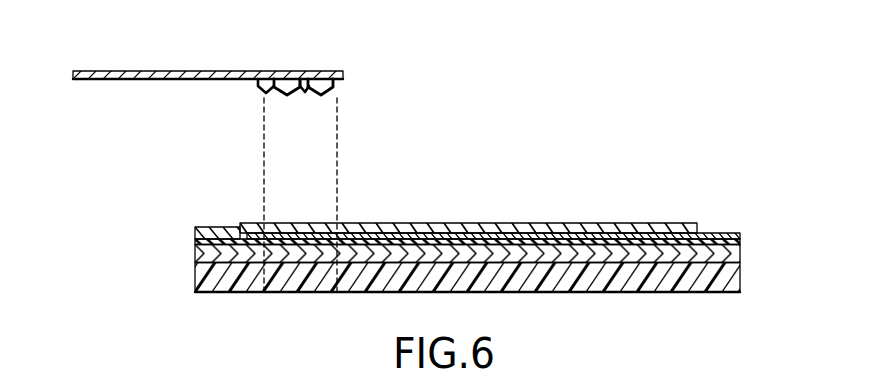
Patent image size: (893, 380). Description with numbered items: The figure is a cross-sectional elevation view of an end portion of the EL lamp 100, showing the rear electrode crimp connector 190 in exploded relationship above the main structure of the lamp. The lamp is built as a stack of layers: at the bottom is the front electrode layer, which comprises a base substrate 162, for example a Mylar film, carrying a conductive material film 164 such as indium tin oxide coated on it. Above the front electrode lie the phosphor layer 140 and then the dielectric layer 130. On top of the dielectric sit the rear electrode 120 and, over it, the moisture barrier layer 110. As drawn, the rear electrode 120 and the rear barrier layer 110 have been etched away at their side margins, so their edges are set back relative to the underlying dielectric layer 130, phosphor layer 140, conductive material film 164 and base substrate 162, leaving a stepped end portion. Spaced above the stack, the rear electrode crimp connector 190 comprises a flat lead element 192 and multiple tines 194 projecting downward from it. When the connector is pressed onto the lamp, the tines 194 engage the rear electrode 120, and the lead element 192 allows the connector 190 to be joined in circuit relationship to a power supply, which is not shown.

The EL lamp 100 is at (503, 209).
The moisture barrier layer 110 is at (645, 222).
The rear electrode 120 is at (686, 223).
The dielectric layer 130 is at (739, 239).
The phosphor layer 140 is at (741, 251).
The base substrate 162 is at (740, 292).
The conductive material film 164 is at (741, 262).
The rear electrode crimp connector 190 is at (223, 79).
The lead element 192 is at (110, 71).
The tines 194 is at (270, 92).